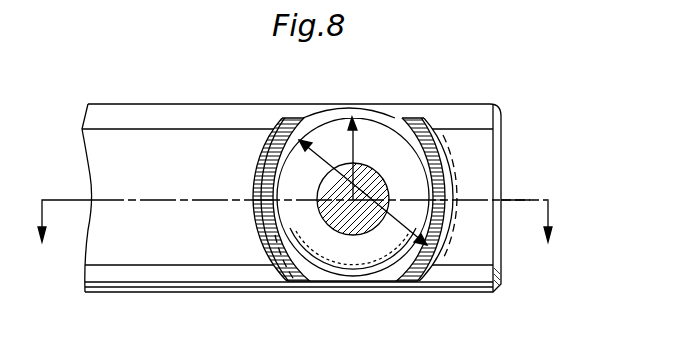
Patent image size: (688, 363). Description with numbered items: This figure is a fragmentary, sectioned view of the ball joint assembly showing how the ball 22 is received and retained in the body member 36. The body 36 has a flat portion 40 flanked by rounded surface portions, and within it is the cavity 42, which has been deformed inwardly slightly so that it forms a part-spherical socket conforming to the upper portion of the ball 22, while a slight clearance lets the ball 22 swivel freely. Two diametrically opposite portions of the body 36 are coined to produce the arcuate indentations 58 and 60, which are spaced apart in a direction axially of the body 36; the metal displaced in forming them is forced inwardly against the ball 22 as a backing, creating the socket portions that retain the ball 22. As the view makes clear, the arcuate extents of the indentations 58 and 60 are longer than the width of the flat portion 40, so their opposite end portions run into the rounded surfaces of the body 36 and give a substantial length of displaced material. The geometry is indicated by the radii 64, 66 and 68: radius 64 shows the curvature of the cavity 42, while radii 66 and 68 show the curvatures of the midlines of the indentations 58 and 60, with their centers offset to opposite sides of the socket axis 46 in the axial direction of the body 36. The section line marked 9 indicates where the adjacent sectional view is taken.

The body member 36 is at (501, 169).
The flat portion 40 is at (162, 163).
The indentation 60 is at (433, 143).
The indentation 58 is at (267, 133).
The ball 22 is at (413, 122).
The cavity 42 is at (377, 122).
The radius 64 is at (346, 127).
The socket axis 46 is at (352, 203).
The radius 66 is at (318, 157).
The radius 68 is at (393, 226).
The section line 9- 9 is at (296, 236).